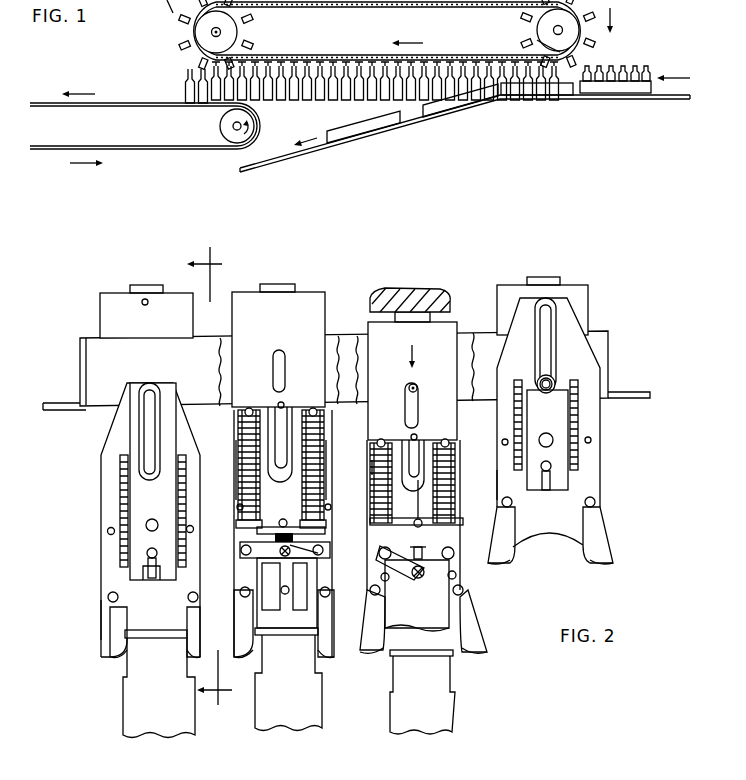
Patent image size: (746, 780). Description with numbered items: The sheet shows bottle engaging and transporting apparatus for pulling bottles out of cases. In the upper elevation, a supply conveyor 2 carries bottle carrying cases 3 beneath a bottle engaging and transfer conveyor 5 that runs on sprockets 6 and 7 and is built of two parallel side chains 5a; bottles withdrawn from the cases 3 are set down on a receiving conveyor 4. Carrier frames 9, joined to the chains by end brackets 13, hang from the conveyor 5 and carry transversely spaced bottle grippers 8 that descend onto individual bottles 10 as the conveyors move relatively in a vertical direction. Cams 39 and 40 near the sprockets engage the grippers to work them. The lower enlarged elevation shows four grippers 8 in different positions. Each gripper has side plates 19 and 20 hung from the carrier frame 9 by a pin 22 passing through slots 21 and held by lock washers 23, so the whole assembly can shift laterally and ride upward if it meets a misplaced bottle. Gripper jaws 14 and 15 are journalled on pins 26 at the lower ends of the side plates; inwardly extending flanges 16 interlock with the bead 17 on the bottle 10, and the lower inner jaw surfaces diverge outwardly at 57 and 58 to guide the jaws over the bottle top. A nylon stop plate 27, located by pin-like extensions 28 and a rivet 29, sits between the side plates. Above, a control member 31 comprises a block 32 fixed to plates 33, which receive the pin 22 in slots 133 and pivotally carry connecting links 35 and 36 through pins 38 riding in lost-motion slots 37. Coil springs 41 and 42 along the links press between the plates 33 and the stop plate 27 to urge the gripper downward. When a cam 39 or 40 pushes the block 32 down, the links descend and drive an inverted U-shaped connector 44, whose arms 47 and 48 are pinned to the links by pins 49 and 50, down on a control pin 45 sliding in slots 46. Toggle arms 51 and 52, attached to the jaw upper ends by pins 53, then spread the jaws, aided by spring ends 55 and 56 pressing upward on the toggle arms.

In FIG. 1, the supply conveyor 2 is at (653, 95).
In FIG. 1, the bottle carrying cases 3 is at (432, 117).
In FIG. 1, the receiving conveyor 4 is at (142, 103).
In FIG. 2, the receiving conveyor 4 is at (216, 476).
In FIG. 1, the bottle engaging and transfer conveyor 5 is at (306, 58).
In FIG. 1, the side chains 5a is at (358, 58).
In FIG. 1, the sprocket 6 is at (535, 17).
In FIG. 1, the sprocket 7 is at (240, 27).
In FIG. 1, the bottle gripper 8 is at (203, 36).
In FIG. 2, the bottle gripper 8 is at (100, 479).
In FIG. 2, the carrier frame 9 is at (80, 352).
In FIG. 2, the bottle 10 is at (126, 713).
In FIG. 2, the end bracket 13 is at (54, 411).
In FIG. 2, the gripper jaw 14 is at (110, 642).
In FIG. 2, the gripper jaw 15 is at (203, 640).
In FIG. 2, the inwardly extending flange 16 is at (540, 538).
In FIG. 2, the bead 17 is at (392, 654).
In FIG. 2, the side plate 19 is at (103, 552).
In FIG. 2, the side plate 20 is at (372, 468).
In FIG. 2, the slot 21 is at (141, 442).
In FIG. 2, the pin 22 is at (148, 384).
In FIG. 2, the lock washer 23 is at (156, 388).
In FIG. 2, the pin 26 is at (108, 598).
In FIG. 2, the stop plate 27 is at (283, 518).
In FIG. 2, the pin-like extension 28 is at (107, 531).
In FIG. 2, the rivet 29 is at (400, 488).
In FIG. 2, the control member 31 is at (137, 284).
In FIG. 2, the block 32 is at (150, 286).
In FIG. 2, the plate 33 is at (100, 308).
In FIG. 2, the connecting link 35 is at (325, 431).
In FIG. 2, the connecting link 36 is at (240, 429).
In FIG. 2, the lost-motion slot 37 is at (240, 458).
In FIG. 2, the pin 38 is at (249, 408).
In FIG. 1, the cam 39 is at (545, 40).
In FIG. 2, the cam 39 is at (385, 292).
In FIG. 1, the cam 40 is at (243, 41).
In FIG. 2, the coil spring 41 is at (186, 493).
In FIG. 2, the coil spring 42 is at (120, 497).
In FIG. 2, the connector 44 is at (257, 545).
In FIG. 2, the control pin 45 is at (150, 580).
In FIG. 2, the slot 46 is at (343, 534).
In FIG. 2, the arm 47 is at (433, 594).
In FIG. 2, the arm 48 is at (401, 594).
In FIG. 2, the pin 49 is at (324, 551).
In FIG. 2, the pin 50 is at (380, 577).
In FIG. 2, the toggle arm 51 is at (262, 574).
In FIG. 2, the toggle arm 52 is at (471, 548).
In FIG. 2, the pin 53 is at (241, 555).
In FIG. 2, the spring end 55 is at (268, 597).
In FIG. 2, the spring end 56 is at (330, 622).
In FIG. 2, the diverging inner surface 57 is at (324, 615).
In FIG. 2, the diverging inner surface 58 is at (390, 616).
In FIG. 2, the slot 133 is at (279, 350).